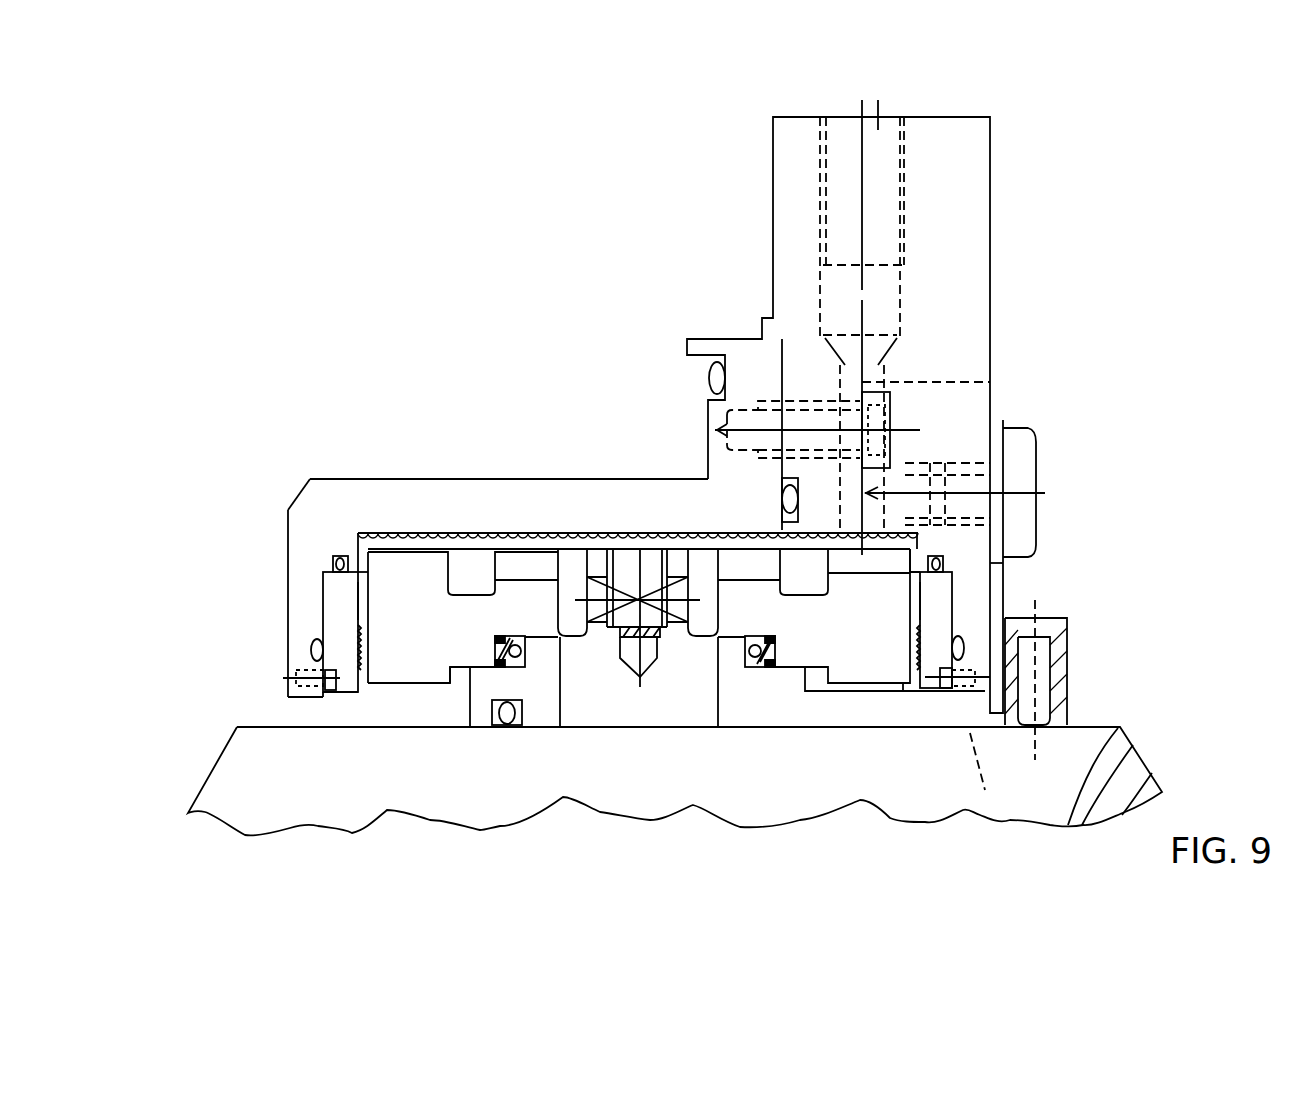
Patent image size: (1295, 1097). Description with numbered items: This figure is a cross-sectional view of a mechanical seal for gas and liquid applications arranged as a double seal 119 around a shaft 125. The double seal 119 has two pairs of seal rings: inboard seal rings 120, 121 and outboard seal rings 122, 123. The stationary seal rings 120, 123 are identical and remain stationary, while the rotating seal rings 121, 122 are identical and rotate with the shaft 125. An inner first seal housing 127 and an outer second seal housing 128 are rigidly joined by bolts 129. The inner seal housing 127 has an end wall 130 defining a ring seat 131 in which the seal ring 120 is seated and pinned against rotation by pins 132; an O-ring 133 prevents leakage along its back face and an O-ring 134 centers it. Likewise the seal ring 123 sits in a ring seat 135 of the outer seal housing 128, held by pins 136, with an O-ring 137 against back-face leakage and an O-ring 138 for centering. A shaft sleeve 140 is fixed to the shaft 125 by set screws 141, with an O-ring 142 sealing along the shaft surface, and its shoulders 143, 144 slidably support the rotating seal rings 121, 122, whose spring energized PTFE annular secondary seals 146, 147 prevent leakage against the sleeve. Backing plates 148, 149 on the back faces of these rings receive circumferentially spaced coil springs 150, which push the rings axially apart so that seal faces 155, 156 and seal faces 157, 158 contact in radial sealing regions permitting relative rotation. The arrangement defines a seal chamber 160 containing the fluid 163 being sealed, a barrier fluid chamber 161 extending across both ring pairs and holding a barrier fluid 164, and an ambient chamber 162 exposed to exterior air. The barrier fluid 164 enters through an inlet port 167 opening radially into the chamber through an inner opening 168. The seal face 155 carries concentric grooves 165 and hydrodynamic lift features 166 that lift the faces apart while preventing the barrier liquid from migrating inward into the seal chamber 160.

The double seal 119 is at (372, 266).
The inboard stationary seal ring 120 is at (347, 692).
The inboard rotating seal ring 121 is at (427, 670).
The outboard rotating seal ring 122 is at (865, 690).
The outboard stationary seal ring 123 is at (922, 700).
The shaft 125 is at (243, 768).
The inner first seal housing 127 is at (322, 492).
The outer second seal housing 128 is at (978, 168).
The bolts 129 is at (893, 393).
The end wall 130 is at (305, 582).
The ring seat 131 is at (323, 595).
The pins 132 is at (283, 668).
The O-ring 133 is at (313, 648).
The O-ring 134 is at (345, 553).
The ring seat 135 is at (953, 587).
The pins 136 is at (985, 790).
The O-ring 137 is at (955, 607).
The O-ring 138 is at (950, 560).
The shaft sleeve 140 is at (638, 700).
The set screws 141 is at (1045, 655).
The O-ring 142 is at (512, 717).
The shoulder 143 is at (560, 700).
The shoulder 144 is at (718, 700).
The annular secondary seal 146 is at (487, 700).
The annular secondary seal 147 is at (772, 700).
The backing plate 148 is at (562, 565).
The backing plate 149 is at (704, 557).
The coil springs 150 is at (592, 572).
The seal face 155 is at (345, 612).
The seal face 156 is at (370, 692).
The seal face 157 is at (917, 610).
The seal face 158 is at (957, 648).
The seal chamber 160 is at (290, 713).
The barrier fluid chamber 161 is at (462, 540).
The ambient chamber 162 is at (903, 700).
The fluid being sealed 163 is at (327, 718).
The barrier fluid 164 is at (480, 553).
The concentric grooves 165 is at (358, 650).
The hydrodynamic lift features 166 is at (358, 586).
The inlet port 167 is at (880, 100).
The inner opening 168 is at (1040, 525).